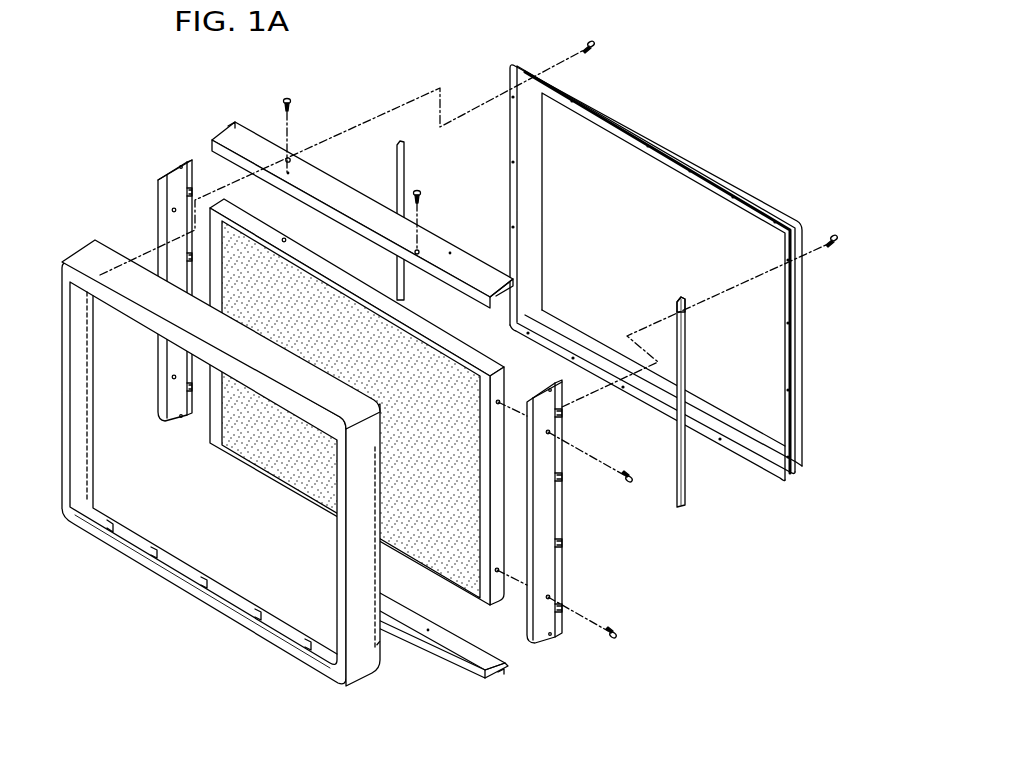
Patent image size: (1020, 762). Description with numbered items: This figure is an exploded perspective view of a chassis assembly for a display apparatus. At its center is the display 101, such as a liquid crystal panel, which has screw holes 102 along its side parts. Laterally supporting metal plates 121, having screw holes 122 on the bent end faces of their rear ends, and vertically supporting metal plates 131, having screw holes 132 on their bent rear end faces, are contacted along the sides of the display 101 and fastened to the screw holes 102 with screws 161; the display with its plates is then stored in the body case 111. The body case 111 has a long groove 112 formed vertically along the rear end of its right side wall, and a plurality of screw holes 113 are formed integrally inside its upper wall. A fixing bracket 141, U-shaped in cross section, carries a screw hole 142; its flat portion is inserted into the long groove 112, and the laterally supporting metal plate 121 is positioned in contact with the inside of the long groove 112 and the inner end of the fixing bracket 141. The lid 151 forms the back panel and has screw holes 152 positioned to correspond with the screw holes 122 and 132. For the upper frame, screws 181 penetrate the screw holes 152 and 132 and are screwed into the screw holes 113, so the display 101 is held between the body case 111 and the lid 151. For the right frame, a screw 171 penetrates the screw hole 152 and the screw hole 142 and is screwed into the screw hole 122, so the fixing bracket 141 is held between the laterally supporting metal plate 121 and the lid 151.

The display 101 is at (380, 348).
The screw holes 102 is at (284, 243).
The body case 111 is at (136, 562).
The long groove 112 is at (84, 461).
The screw holes 113 is at (120, 266).
The laterally supporting metal plate 121 is at (167, 173).
The screw holes 122 is at (561, 478).
The vertically supporting metal plate 131 is at (480, 280).
The screw holes 132 is at (303, 163).
The fixing bracket 141 is at (407, 178).
The screw hole 142 is at (688, 320).
The lid 151 is at (688, 194).
The screw holes 152 is at (510, 63).
The screws 161 is at (288, 98).
The screw 171 is at (832, 232).
The screws 181 is at (600, 45).